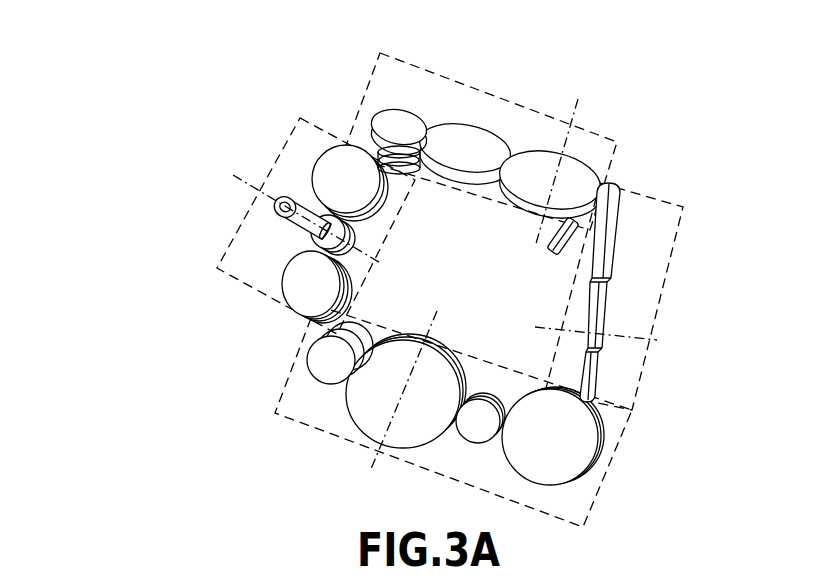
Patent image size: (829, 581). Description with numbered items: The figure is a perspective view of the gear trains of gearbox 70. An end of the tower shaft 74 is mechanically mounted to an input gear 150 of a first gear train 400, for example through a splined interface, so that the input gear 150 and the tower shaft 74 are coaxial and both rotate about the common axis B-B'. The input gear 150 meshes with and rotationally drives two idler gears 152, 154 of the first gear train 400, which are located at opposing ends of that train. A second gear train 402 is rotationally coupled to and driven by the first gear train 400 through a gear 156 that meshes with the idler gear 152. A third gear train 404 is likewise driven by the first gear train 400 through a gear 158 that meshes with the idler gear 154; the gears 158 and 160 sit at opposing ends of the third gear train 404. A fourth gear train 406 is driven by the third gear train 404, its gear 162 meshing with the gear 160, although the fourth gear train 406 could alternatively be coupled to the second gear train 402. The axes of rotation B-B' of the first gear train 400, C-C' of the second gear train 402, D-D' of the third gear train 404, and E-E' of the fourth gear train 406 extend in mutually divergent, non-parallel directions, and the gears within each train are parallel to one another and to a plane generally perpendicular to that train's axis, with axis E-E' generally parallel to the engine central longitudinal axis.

The gearbox 70 is at (161, 85).
The tower shaft 74 is at (290, 198).
The input gear 150 is at (310, 240).
The idler gear 152 is at (303, 286).
The idler gear 154 is at (336, 177).
The gear 156 is at (309, 331).
The gear 158 is at (357, 127).
The gear 160 is at (581, 181).
The gear 162 is at (608, 222).
The first gear train 400 is at (216, 267).
The second gear train 402 is at (311, 431).
The third gear train 404 is at (471, 86).
The fourth gear train 406 is at (659, 306).